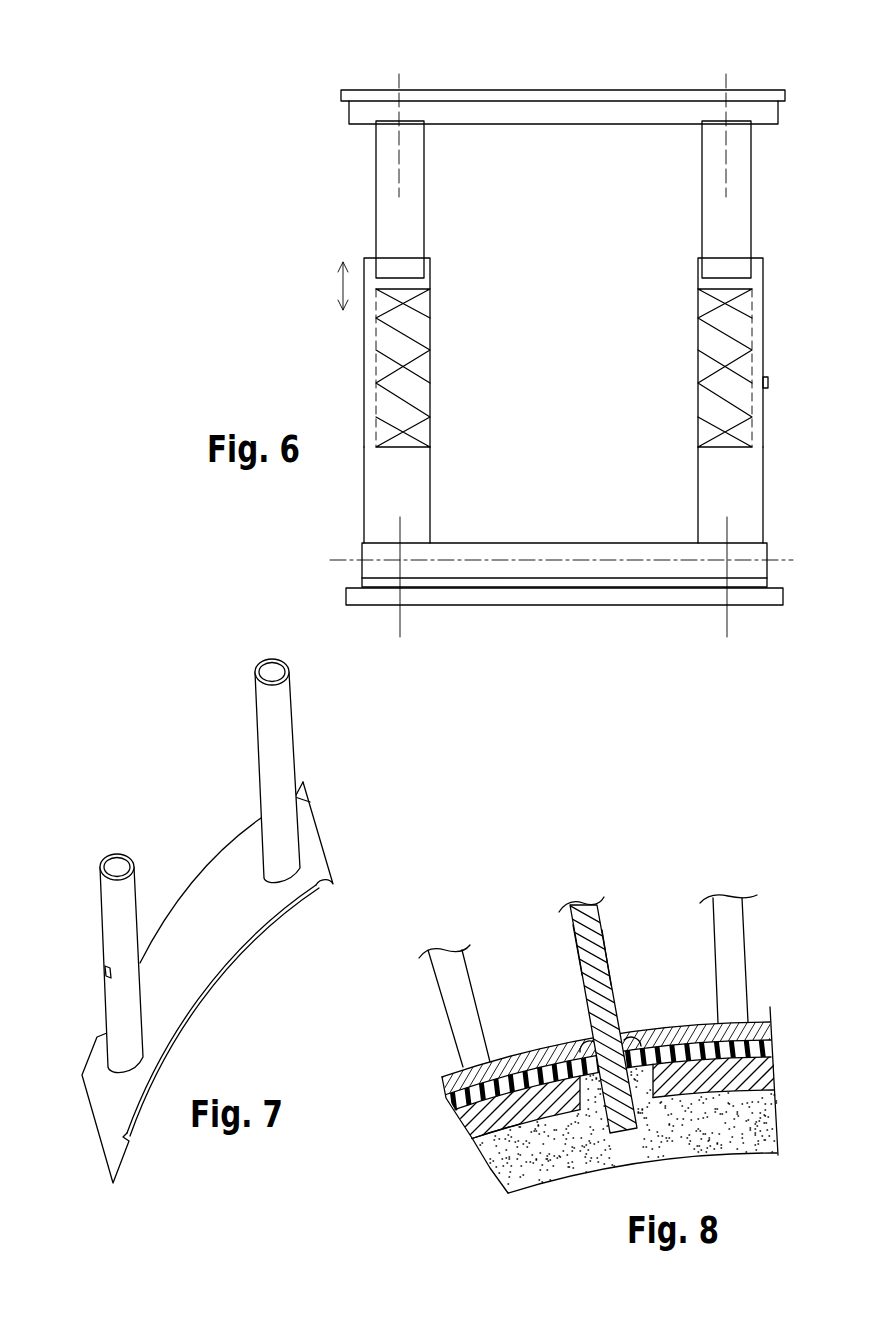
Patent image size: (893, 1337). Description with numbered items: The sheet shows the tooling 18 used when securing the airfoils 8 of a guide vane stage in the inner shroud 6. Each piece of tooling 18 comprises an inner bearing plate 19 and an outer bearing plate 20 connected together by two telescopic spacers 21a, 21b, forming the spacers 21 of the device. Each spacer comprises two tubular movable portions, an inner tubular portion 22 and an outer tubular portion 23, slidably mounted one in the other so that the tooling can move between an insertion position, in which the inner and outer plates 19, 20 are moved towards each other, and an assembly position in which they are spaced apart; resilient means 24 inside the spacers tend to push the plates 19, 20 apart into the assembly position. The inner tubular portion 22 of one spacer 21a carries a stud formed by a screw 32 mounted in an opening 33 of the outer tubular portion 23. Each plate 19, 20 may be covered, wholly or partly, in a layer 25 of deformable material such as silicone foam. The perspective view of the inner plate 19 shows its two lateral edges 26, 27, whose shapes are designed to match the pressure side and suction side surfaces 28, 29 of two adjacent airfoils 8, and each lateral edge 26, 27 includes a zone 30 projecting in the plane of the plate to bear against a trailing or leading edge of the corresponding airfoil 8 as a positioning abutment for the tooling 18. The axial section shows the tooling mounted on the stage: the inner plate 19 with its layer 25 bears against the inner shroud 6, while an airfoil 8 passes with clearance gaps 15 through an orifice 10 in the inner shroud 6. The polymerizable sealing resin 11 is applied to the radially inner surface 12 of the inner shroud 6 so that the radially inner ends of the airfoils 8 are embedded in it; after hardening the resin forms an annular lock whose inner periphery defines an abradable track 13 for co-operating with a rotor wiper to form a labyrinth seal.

In FIG. 8, the inner shroud 6 is at (636, 1136).
In FIG. 8, the airfoils 8 is at (593, 1030).
In FIG. 8, the orifices 10 is at (560, 1110).
In FIG. 8, the sealing resin 11 is at (693, 1117).
In FIG. 8, the radially inner surface 12 is at (508, 1132).
In FIG. 8, the abradable track 13 is at (730, 1160).
In FIG. 8, the gaps 15 is at (643, 1097).
In FIG. 6, the tooling 18 is at (305, 210).
In FIG. 7, the tooling 18 is at (368, 813).
In FIG. 8, the tooling 18 is at (586, 955).
In FIG. 6, the inner bearing plate 19 is at (758, 597).
In FIG. 7, the inner bearing plate 19 is at (211, 973).
In FIG. 8, the inner bearing plate 19 is at (526, 1058).
In FIG. 6, the outer bearing plate 20 is at (763, 122).
In FIG. 8, the telescopic spacers 21 is at (462, 1010).
In FIG. 6, the telescopic spacer 21a is at (783, 337).
In FIG. 6, the telescopic spacer 21b is at (452, 345).
In FIG. 6, the inner tubular portion 22 is at (415, 183).
In FIG. 6, the outer tubular portion 23 is at (413, 495).
In FIG. 7, the outer tubular portion 23 is at (280, 742).
In FIG. 6, the resilient means 24 is at (420, 363).
In FIG. 6, the layer of deformable material 25 is at (763, 92).
In FIG. 8, the layer of deformable material 25 is at (738, 1045).
In FIG. 7, the lateral edge 26 is at (212, 983).
In FIG. 8, the lateral edge 26 is at (630, 1046).
In FIG. 7, the lateral edge 27 is at (168, 913).
In FIG. 8, the lateral edge 27 is at (578, 1052).
In FIG. 8, the pressure side surface 28 is at (610, 985).
In FIG. 8, the suction side surface 29 is at (577, 975).
In FIG. 7, the projecting zone 30 is at (95, 1063).
In FIG. 6, the screw 32 is at (768, 382).
In FIG. 7, the opening 33 is at (308, 797).